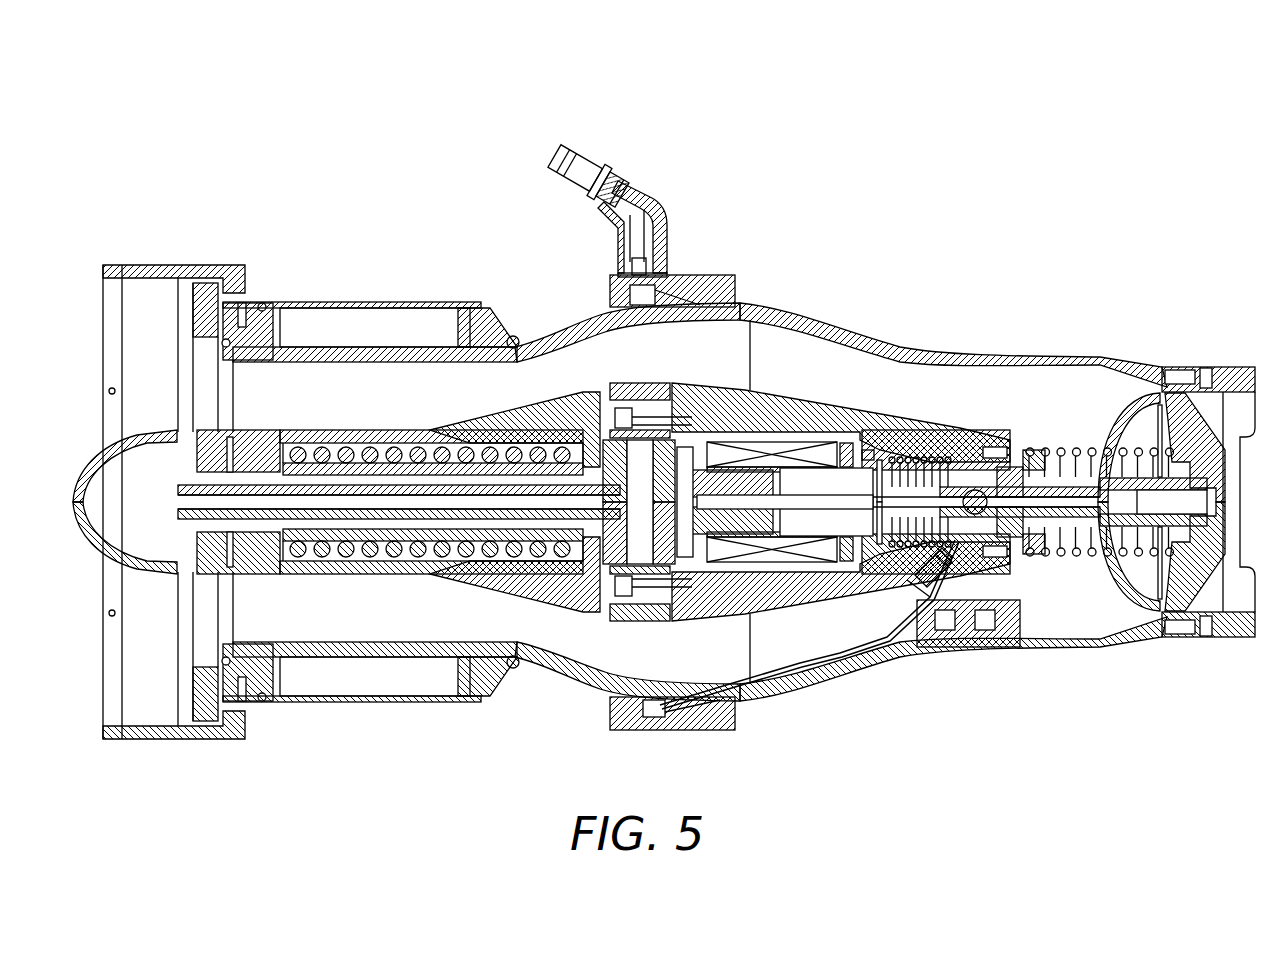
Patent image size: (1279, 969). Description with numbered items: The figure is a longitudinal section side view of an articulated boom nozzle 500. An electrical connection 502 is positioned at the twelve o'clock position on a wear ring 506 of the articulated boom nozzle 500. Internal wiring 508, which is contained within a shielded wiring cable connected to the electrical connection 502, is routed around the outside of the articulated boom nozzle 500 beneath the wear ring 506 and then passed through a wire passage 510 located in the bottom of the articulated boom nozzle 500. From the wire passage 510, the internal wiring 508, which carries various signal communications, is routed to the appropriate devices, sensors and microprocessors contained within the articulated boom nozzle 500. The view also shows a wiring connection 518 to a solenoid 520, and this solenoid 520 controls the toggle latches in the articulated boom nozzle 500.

The articulated boom nozzle 500 is at (172, 180).
The electrical connection 502 is at (597, 180).
The wear ring 506 is at (563, 325).
The internal wiring 508 is at (650, 217).
The wire passage 510 is at (980, 600).
The wiring connection 518 is at (878, 556).
The solenoid 520 is at (878, 453).